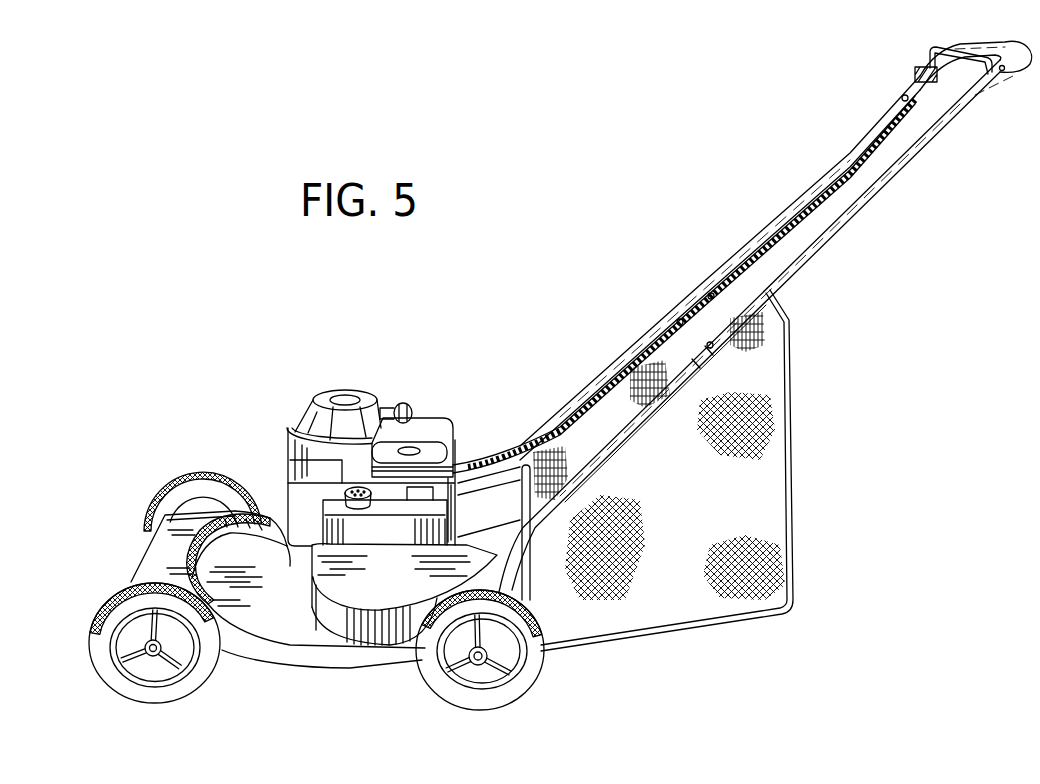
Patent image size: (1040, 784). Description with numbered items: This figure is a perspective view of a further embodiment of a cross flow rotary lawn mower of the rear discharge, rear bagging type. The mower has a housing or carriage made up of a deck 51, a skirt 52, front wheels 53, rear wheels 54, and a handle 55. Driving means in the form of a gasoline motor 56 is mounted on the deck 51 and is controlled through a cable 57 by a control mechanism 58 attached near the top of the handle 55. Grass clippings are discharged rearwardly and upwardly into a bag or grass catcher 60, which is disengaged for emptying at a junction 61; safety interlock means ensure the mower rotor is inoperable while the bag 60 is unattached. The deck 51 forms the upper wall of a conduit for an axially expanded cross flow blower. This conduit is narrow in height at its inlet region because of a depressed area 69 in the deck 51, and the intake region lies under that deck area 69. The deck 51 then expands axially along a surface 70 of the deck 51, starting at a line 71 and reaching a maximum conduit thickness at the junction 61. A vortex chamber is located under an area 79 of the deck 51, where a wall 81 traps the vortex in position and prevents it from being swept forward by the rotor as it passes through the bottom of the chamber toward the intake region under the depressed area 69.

The deck 51 is at (178, 571).
The skirt 52 is at (282, 655).
The front wheels 53 is at (163, 490).
The rear wheels 54 is at (542, 678).
The handle 55 is at (723, 280).
The gasoline motor 56 is at (433, 419).
The cable 57 is at (488, 458).
The control mechanism 58 is at (915, 68).
The bag or grass catcher 60 is at (790, 506).
The junction 61 is at (531, 574).
The depressed area 69 is at (291, 615).
The surface 70 is at (507, 515).
The line 71 is at (279, 538).
The area of deck 79 is at (406, 587).
The wall 81 is at (350, 632).